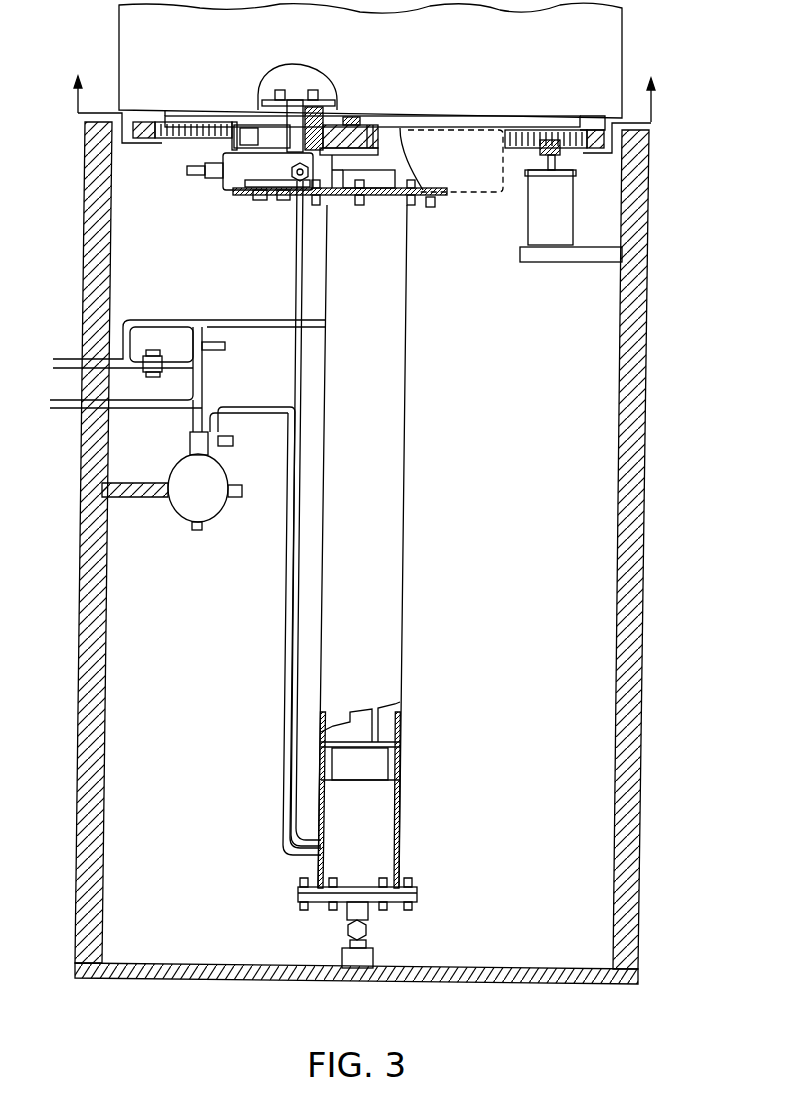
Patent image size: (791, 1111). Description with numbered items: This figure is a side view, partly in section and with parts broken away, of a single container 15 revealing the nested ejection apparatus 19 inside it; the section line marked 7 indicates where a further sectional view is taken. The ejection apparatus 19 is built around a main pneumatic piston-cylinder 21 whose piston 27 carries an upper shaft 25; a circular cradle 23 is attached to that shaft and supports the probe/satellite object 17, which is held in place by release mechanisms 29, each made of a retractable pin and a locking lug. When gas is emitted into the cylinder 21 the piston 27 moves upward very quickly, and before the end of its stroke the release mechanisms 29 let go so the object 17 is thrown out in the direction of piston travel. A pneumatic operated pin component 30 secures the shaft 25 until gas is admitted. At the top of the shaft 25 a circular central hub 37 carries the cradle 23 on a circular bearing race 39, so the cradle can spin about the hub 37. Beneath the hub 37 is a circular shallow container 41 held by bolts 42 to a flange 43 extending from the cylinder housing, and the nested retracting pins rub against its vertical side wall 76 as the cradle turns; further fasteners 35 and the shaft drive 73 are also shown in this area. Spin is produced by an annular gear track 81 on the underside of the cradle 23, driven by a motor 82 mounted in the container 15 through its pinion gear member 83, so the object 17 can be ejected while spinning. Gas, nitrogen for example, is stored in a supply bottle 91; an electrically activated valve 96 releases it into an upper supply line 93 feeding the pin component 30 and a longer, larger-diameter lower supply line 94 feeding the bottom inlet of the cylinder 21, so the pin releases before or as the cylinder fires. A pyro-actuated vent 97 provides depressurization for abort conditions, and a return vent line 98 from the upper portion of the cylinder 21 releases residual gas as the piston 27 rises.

The section line 7- 7 is at (364, 97).
The container 15 is at (618, 490).
The probe/satellite object 17 is at (573, 55).
The ejection apparatus 19 is at (450, 360).
The main pneumatic piston-cylinder 21 is at (400, 437).
The circular cradle 23 is at (463, 122).
The upper shaft 25 is at (378, 162).
The piston 27 is at (347, 777).
The release mechanisms 29 is at (258, 140).
The pneumatic operated pin component 30 is at (248, 172).
The mounting bolts 35 is at (333, 188).
The circular central hub 37 is at (393, 120).
The circular bearing race 39 is at (333, 120).
The circular shallow container 41 is at (460, 176).
The bolts 42 is at (411, 206).
The flange 43 is at (445, 198).
The motor drive shaft 73 is at (300, 98).
The vertical side wall 76 is at (493, 200).
The annular gear track 81 is at (575, 150).
The motor 82 is at (535, 223).
The pinion gear member 83 is at (550, 147).
The compressed gas supply bottle 91 is at (233, 408).
The upper supply line 93 is at (298, 282).
The lower supply line 94 is at (292, 615).
The electrically activated valve 96 is at (222, 447).
The pyro-actuated vent 97 is at (195, 410).
The return vent line 98 is at (210, 323).